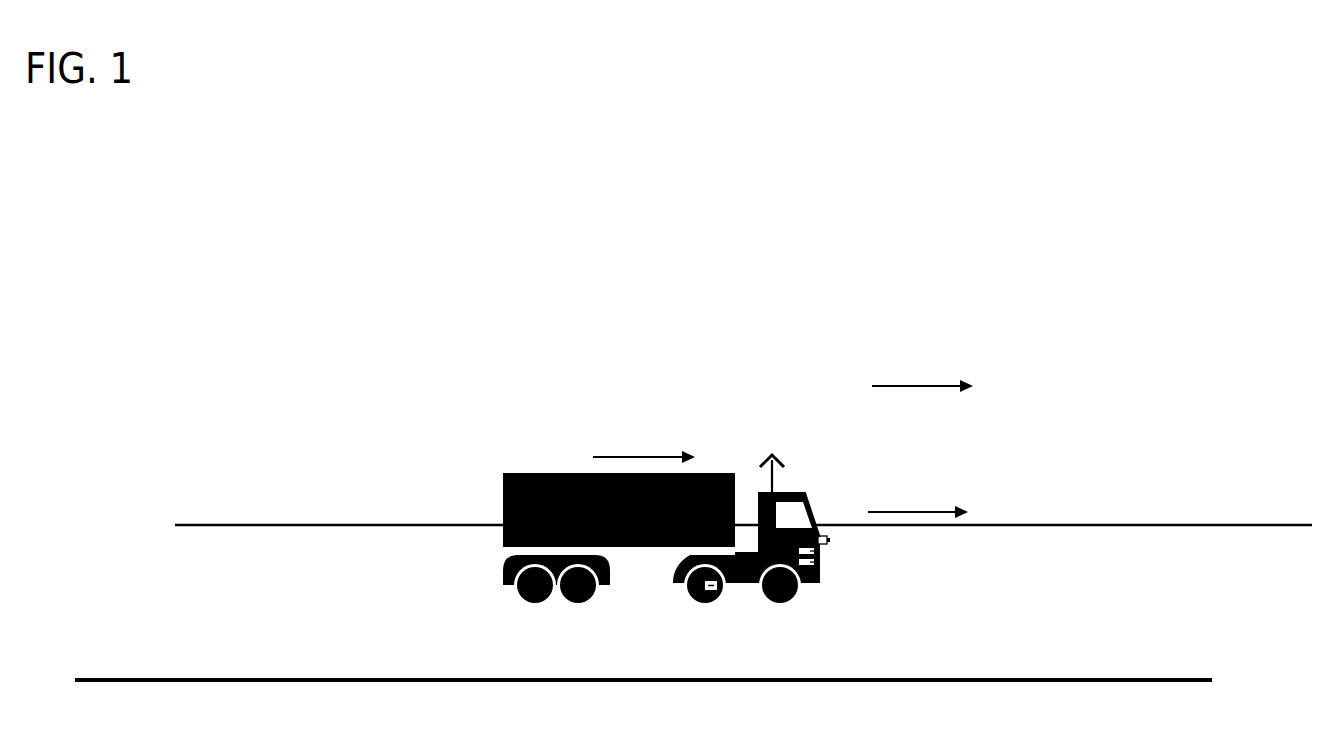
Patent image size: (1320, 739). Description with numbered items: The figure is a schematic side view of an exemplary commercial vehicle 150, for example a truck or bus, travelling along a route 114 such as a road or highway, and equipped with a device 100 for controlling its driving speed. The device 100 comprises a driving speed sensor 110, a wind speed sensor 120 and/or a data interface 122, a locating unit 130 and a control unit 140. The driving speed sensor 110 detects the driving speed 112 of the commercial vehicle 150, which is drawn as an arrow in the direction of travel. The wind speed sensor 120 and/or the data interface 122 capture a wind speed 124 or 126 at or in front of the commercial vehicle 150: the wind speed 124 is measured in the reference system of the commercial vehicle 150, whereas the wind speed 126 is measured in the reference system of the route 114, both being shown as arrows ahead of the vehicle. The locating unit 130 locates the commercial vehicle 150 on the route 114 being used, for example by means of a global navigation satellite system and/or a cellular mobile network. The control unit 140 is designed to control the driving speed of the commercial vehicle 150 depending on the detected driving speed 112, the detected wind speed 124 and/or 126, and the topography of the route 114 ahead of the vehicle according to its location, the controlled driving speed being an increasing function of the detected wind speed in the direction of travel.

The device for controlling a driving speed 100 is at (777, 328).
The driving speed sensor 110 is at (723, 590).
The driving speed 112 is at (632, 415).
The route 114 is at (1213, 543).
The wind speed sensor 120 is at (828, 528).
The data interface 122 is at (768, 450).
The wind speed 124 is at (920, 472).
The wind speed 126 is at (922, 345).
The locating unit 130 is at (818, 567).
The control unit 140 is at (818, 552).
The commercial vehicle 150 is at (590, 272).